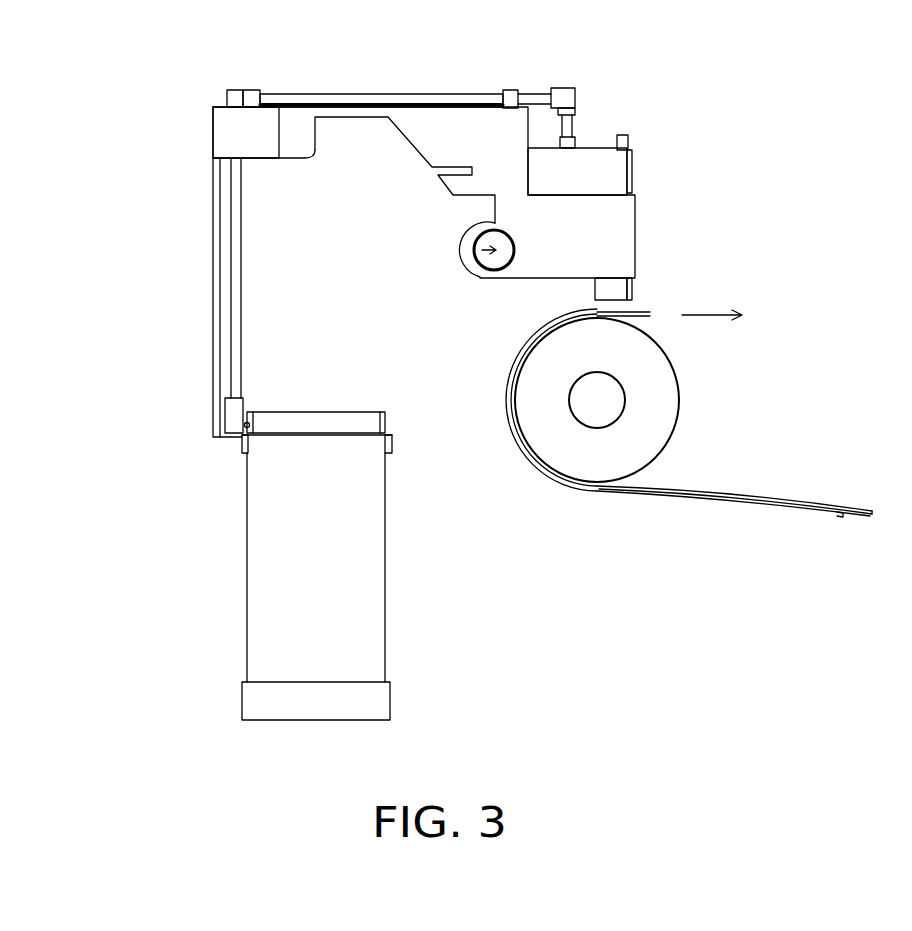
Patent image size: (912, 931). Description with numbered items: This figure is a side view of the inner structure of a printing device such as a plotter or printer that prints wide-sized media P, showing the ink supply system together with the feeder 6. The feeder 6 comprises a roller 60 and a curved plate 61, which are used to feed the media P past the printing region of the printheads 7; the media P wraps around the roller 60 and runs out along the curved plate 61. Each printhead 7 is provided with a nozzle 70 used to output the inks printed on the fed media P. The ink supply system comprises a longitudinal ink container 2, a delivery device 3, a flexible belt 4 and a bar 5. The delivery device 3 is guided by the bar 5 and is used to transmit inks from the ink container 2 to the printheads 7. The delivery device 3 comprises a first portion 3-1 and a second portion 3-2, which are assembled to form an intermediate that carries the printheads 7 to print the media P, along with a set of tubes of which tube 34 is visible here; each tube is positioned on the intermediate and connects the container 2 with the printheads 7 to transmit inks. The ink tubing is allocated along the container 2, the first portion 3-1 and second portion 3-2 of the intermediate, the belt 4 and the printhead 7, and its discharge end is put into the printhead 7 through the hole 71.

The delivery device 3 is at (84, 22).
The first portion 3-1 is at (443, 133).
The second portion 3-2 is at (237, 135).
The tube 34 is at (483, 92).
The hole 71 is at (578, 143).
The printhead 7 is at (634, 177).
The bar 5 is at (476, 250).
The nozzle 70 is at (622, 292).
The roller 60 is at (658, 408).
The feeder 6 is at (590, 494).
The curved plate 61 is at (840, 517).
The media P is at (861, 504).
The flexible belt 4 is at (389, 422).
The ink container 2 is at (389, 562).